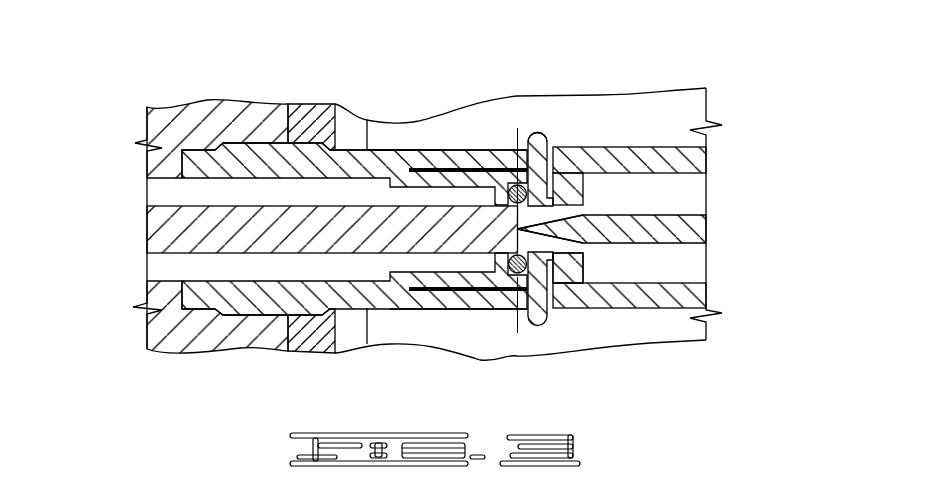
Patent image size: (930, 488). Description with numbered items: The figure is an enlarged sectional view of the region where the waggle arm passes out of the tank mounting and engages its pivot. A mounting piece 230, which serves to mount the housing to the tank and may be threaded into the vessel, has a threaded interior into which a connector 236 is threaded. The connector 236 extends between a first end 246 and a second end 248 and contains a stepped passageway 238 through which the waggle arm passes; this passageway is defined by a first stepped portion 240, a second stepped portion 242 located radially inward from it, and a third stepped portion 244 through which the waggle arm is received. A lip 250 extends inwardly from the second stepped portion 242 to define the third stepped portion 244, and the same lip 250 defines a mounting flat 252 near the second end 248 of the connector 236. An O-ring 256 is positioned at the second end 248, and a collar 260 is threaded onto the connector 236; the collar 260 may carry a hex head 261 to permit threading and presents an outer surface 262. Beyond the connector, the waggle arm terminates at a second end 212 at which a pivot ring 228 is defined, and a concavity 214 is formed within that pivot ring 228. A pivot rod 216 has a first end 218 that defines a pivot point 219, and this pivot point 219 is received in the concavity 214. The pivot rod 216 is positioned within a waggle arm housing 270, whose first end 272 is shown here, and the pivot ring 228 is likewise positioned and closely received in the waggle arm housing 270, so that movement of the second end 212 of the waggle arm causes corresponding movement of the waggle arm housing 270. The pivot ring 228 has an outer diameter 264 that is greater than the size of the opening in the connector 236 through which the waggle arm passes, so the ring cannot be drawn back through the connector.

The second end 212 is at (545, 222).
The concavity 214 is at (535, 233).
The pivot rod 216 is at (650, 228).
The first end 218 is at (557, 327).
The pivot point 219 is at (547, 300).
The pivot ring 228 is at (548, 224).
The mounting piece 230 is at (230, 117).
The connector 236 is at (354, 222).
The stepped passageway 238 is at (274, 243).
The first stepped portion 240 is at (195, 272).
The second stepped portion 242 is at (405, 292).
The third stepped portion 244 is at (566, 178).
The first end 246 is at (158, 311).
The second end 248 is at (523, 150).
The lip 250 is at (447, 150).
The mounting flat 252 is at (512, 276).
The O-ring 256 is at (507, 183).
The collar 260 is at (420, 150).
The hex head 261 is at (532, 133).
The outer surface 262 is at (435, 311).
The outer diameter 264 is at (573, 285).
The waggle arm housing 270 is at (687, 298).
The first end 272 is at (549, 107).